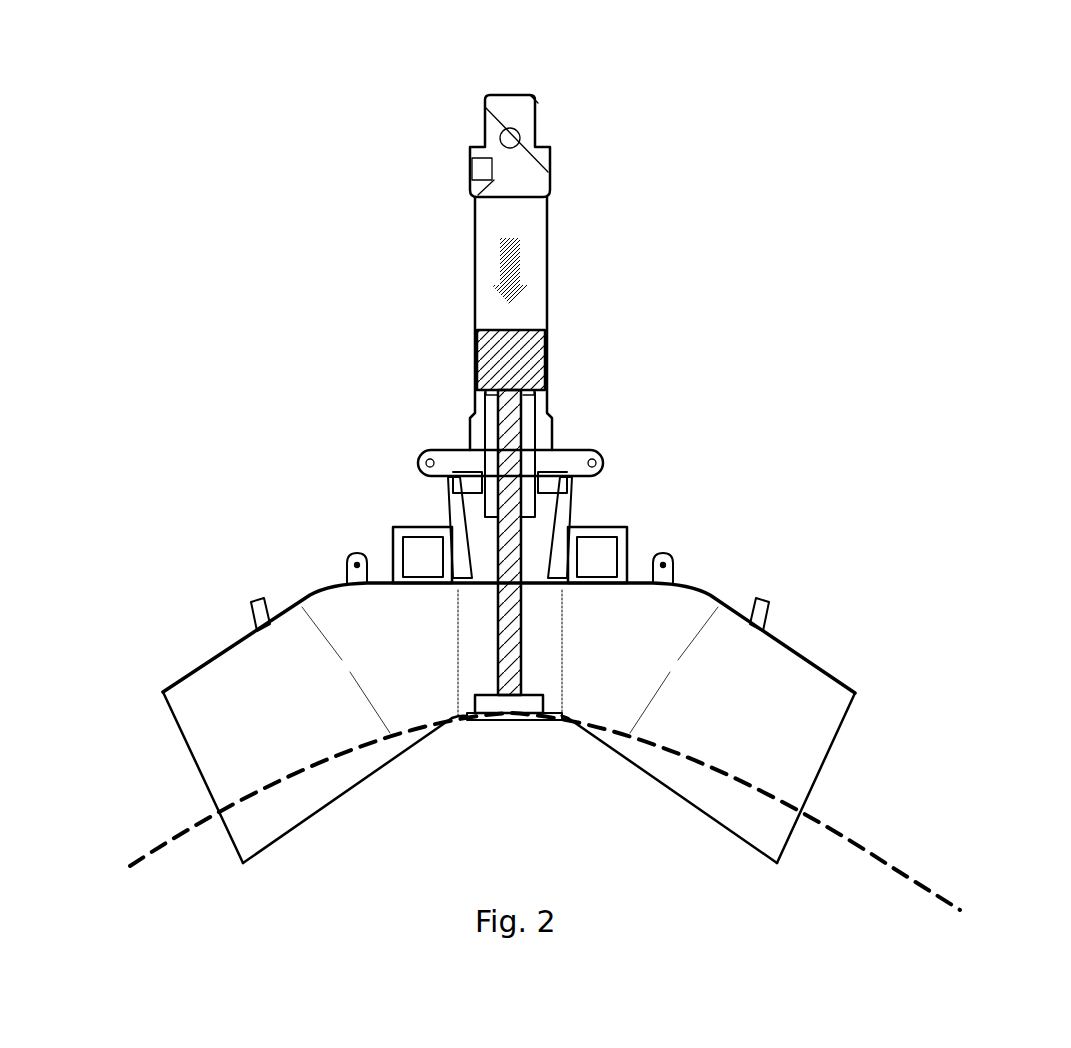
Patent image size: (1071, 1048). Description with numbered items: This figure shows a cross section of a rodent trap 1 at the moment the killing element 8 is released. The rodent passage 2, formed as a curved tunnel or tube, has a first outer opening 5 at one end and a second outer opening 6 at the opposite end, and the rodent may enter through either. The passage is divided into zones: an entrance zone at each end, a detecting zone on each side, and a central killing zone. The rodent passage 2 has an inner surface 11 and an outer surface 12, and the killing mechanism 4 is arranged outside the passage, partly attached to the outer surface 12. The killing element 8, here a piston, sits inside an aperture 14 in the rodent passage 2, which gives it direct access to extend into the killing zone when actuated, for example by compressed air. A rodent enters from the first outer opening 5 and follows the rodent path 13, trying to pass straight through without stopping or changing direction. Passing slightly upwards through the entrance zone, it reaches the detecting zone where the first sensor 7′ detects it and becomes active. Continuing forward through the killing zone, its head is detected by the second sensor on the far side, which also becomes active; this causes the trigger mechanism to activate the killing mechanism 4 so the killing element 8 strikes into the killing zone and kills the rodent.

The rodent trap 1 is at (750, 148).
The rodent passage 2 is at (297, 592).
The killing mechanism 4 is at (451, 297).
The first outer opening 5 is at (187, 752).
The second outer opening 6 is at (827, 760).
The first sensor 7′ is at (397, 547).
The killing element 8 is at (510, 365).
The inner surface 11 is at (327, 797).
The outer surface 12 is at (343, 802).
The rodent path 13 is at (150, 843).
The aperture 14 is at (540, 583).